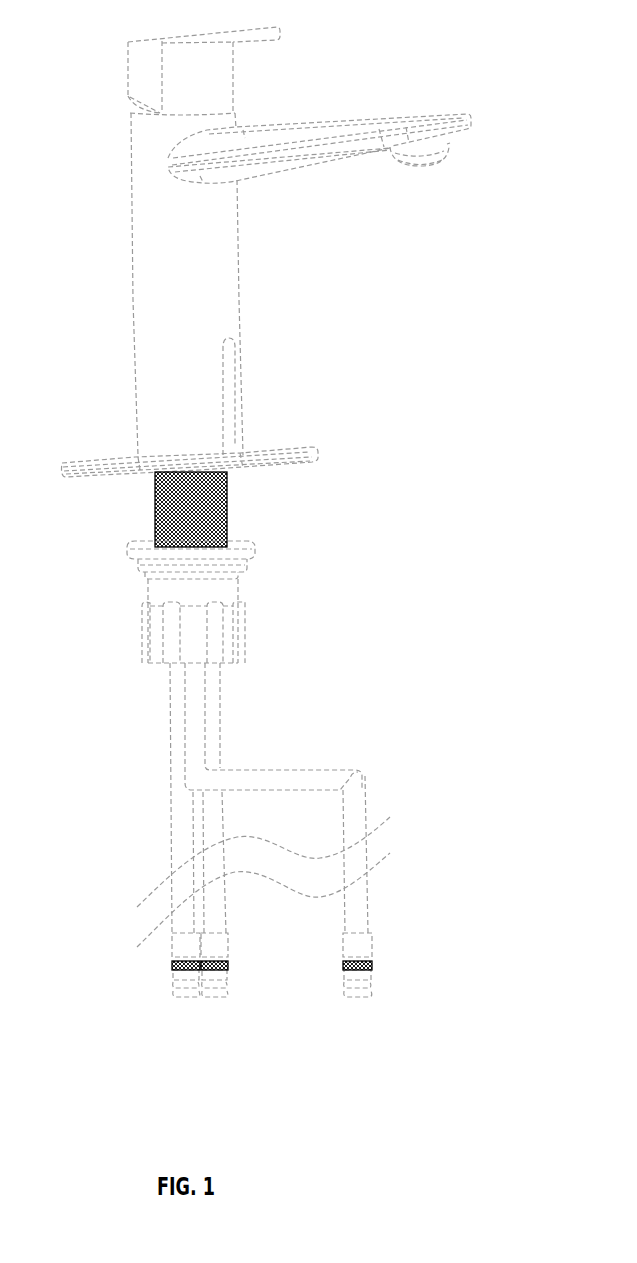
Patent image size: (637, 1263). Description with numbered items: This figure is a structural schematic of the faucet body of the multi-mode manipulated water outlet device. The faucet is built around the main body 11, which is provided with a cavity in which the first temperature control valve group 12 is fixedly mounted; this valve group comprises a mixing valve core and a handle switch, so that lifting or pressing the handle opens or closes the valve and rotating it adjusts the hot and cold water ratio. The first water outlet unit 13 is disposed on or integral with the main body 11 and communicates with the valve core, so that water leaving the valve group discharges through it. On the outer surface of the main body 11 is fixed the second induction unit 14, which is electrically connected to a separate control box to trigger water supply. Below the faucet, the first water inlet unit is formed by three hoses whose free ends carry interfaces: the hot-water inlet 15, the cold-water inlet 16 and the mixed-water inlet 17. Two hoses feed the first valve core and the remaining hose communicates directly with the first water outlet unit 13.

The main body 11 is at (217, 273).
The first temperature control valve group 12 is at (223, 89).
The first water outlet unit 13 is at (417, 167).
The second induction unit 14 is at (232, 402).
The hot-water inlet 15 is at (360, 997).
The cold-water inlet 16 is at (215, 997).
The mixed-water inlet 17 is at (190, 997).